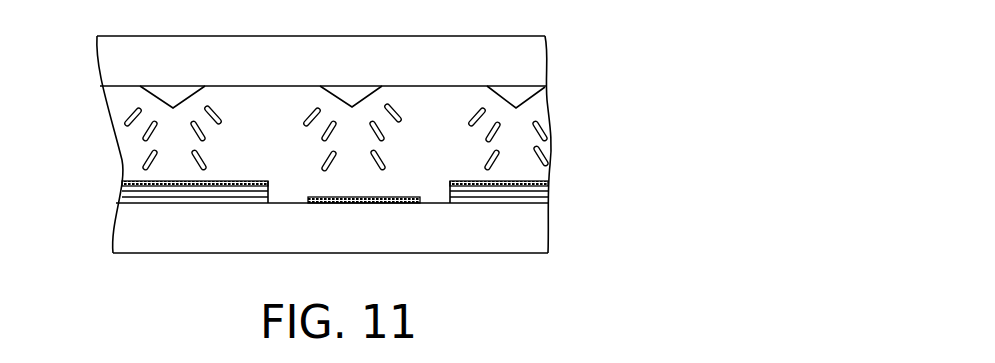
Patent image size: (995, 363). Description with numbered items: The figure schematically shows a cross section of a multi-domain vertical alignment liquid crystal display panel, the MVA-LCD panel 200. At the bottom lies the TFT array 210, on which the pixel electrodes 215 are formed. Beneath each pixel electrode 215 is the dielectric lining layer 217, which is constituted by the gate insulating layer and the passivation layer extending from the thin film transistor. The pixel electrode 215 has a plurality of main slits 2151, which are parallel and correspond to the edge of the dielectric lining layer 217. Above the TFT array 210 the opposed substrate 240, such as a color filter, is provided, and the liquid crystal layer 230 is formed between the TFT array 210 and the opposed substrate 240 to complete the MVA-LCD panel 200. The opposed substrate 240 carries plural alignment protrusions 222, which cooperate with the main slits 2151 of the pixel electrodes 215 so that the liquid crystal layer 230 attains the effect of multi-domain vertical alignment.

The MVA-LCD panel 200 is at (684, 309).
The opposed substrate 240 is at (537, 62).
The alignment protrusions 222 is at (523, 100).
The liquid crystal layer 230 is at (548, 145).
The pixel electrode 215 is at (545, 183).
The dielectric lining layer 217 is at (556, 188).
The main slits 2151 is at (433, 197).
The TFT array 210 is at (543, 230).